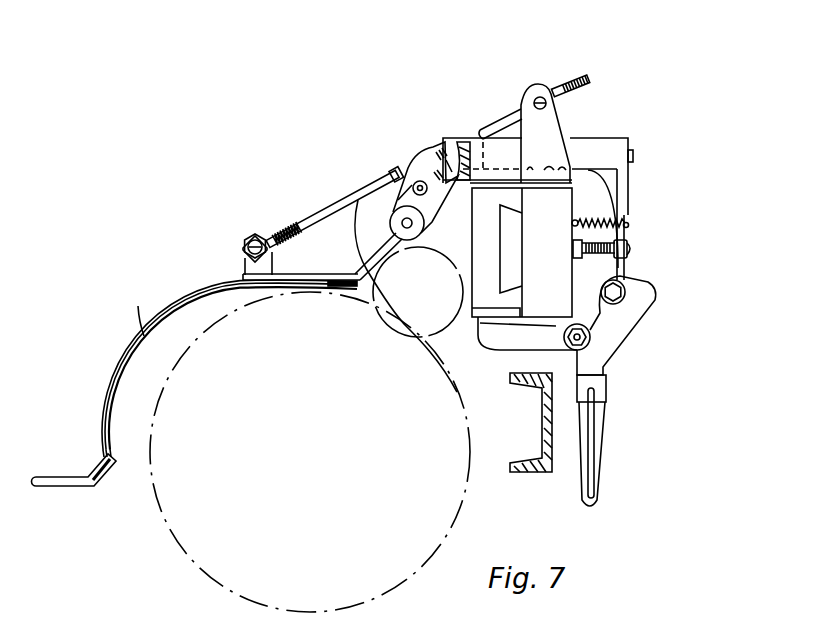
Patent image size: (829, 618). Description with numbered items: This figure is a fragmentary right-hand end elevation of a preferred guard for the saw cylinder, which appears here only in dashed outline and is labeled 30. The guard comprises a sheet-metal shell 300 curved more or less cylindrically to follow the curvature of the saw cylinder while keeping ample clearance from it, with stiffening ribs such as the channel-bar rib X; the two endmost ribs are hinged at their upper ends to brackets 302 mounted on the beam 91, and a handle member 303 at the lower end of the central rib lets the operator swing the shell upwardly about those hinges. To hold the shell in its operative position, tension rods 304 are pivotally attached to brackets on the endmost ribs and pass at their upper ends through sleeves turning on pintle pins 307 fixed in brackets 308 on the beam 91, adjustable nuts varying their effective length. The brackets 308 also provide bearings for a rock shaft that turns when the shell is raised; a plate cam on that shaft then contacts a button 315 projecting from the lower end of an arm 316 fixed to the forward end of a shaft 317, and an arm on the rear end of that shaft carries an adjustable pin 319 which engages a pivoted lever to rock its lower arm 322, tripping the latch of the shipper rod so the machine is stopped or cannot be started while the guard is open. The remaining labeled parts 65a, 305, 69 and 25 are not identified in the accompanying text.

The shell 300 is at (127, 398).
The handle member 303 is at (56, 490).
The cylinder 30 is at (203, 548).
The arcuate guide 65a is at (403, 305).
The tension rods 304 is at (327, 212).
The pivot bracket 305 is at (252, 268).
The button 315 is at (409, 232).
The arm 316 is at (420, 160).
The brackets 302 is at (432, 213).
The housing 69 is at (473, 247).
The brackets 308 is at (560, 127).
The pintle pins 307 is at (541, 96).
The shaft 317 is at (636, 152).
The beam 91 is at (548, 272).
The adjustable pin 319 is at (618, 293).
The channel member 25 is at (545, 430).
The lower lever arm 322 is at (591, 481).